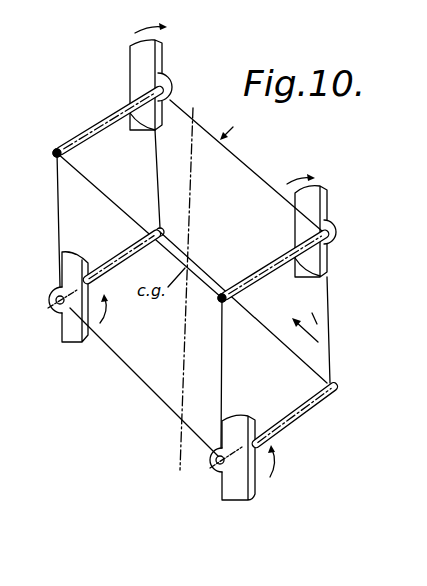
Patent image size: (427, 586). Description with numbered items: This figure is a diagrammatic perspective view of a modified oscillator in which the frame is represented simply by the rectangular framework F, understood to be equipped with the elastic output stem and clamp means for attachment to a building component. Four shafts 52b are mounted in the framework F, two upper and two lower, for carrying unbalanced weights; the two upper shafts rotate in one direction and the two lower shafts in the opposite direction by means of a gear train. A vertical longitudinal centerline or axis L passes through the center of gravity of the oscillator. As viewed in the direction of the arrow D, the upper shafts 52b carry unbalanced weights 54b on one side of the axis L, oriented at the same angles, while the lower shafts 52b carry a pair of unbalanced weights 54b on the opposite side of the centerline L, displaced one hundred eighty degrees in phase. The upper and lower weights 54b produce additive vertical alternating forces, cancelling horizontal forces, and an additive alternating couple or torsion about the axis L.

The shaft 52b is at (302, 427).
The unbalanced weight 54b is at (227, 518).
The vertical longitudinal centerline or axis L is at (183, 282).
The rectangular framework F is at (234, 127).
The arrow D is at (305, 316).